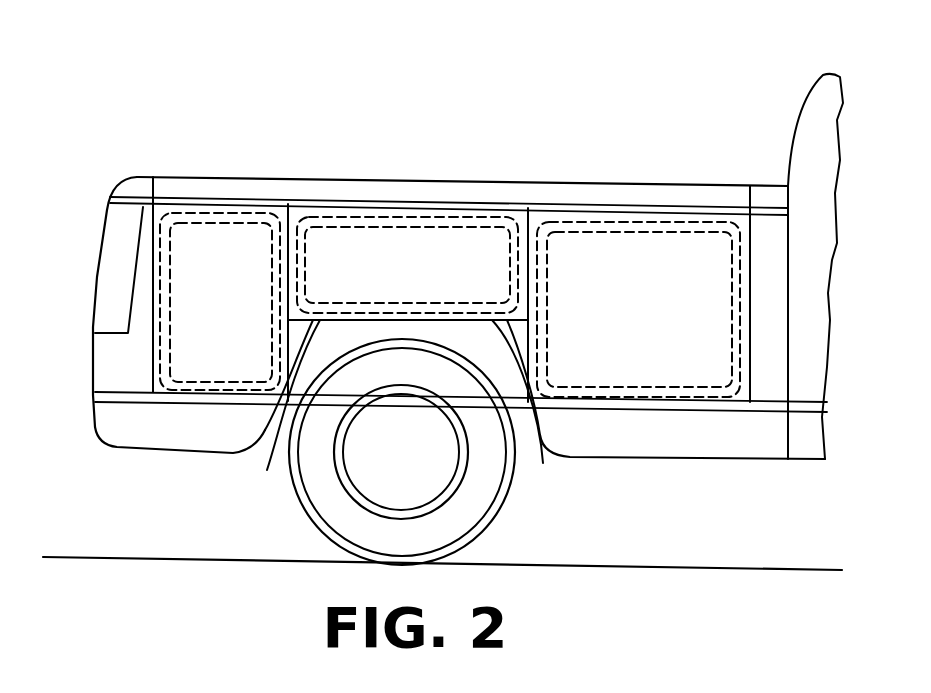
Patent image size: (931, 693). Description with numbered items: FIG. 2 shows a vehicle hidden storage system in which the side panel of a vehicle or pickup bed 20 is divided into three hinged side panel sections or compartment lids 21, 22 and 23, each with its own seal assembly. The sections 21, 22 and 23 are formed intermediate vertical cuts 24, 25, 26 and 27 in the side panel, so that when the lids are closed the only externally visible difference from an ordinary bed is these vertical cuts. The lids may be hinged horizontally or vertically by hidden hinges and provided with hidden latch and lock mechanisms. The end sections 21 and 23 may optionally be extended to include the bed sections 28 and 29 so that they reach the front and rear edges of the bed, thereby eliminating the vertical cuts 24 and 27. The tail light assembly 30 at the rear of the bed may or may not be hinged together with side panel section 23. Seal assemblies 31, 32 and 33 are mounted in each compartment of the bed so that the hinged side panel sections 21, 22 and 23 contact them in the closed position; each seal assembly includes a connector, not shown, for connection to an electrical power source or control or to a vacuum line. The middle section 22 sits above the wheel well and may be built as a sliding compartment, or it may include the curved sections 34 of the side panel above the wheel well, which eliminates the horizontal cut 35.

The pickup bed 20 is at (597, 150).
The hinged side panel section 21 is at (638, 309).
The hinged side panel section 22 is at (407, 265).
The hinged side panel section 23 is at (220, 301).
The vertical cut 24 is at (752, 380).
The vertical cut 25 is at (535, 410).
The vertical cut 26 is at (268, 410).
The vertical cut 27 is at (150, 363).
The bed section 28 is at (770, 200).
The bed section 29 is at (140, 187).
The tail light assembly 30 is at (113, 258).
The seal assembly 31 is at (730, 307).
The seal assembly 32 is at (508, 250).
The seal assembly 33 is at (270, 267).
The curved sections 34 is at (290, 325).
The horizontal cut 35 is at (403, 320).